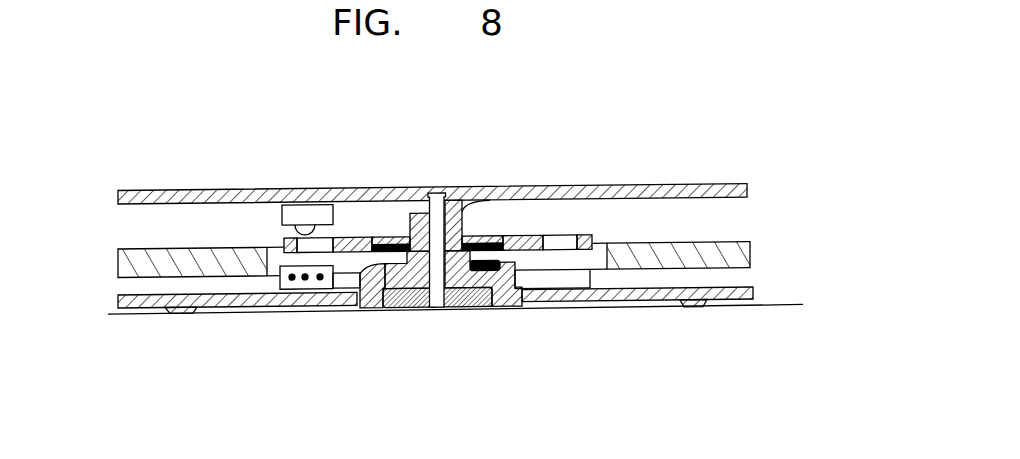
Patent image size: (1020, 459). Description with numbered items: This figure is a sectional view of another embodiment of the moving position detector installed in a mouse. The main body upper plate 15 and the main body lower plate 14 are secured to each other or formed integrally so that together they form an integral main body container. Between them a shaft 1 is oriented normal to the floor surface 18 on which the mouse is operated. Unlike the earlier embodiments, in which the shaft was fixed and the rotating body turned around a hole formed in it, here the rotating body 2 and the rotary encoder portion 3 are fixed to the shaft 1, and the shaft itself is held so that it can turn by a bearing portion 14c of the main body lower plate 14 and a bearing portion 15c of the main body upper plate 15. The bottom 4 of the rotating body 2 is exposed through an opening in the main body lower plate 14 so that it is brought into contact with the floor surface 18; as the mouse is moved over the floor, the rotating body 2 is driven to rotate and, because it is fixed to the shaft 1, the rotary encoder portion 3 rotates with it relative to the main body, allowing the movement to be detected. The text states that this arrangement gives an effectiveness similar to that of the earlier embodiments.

The shaft 1 is at (432, 193).
The rotating body 2 is at (490, 310).
The rotary encoder portion 3 is at (347, 236).
The bottom 4 is at (460, 313).
The main body lower plate 14 is at (257, 313).
The bearing portion 14c is at (363, 312).
The main body upper plate 15 is at (605, 188).
The bearing portion 15c is at (485, 208).
The floor surface 18 is at (787, 305).